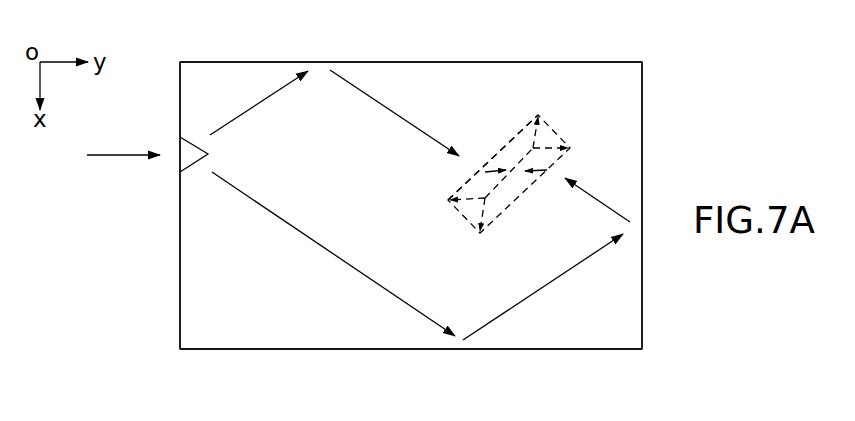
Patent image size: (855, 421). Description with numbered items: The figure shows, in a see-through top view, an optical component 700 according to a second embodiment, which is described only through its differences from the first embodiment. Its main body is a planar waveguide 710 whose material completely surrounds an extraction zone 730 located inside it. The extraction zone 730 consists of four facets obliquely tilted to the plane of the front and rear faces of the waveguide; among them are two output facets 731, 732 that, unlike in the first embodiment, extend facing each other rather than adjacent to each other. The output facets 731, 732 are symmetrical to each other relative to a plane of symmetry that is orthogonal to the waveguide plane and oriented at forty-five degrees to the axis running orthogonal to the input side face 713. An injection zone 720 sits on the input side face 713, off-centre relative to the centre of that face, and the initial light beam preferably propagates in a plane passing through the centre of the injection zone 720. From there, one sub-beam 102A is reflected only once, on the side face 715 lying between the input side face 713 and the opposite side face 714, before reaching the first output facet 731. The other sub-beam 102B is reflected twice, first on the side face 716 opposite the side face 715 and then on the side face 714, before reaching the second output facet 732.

The optical component 700 is at (664, 63).
The planar waveguide 710 is at (193, 302).
The input side face 713 is at (180, 222).
The side face 714 is at (642, 322).
The side face 715 is at (590, 62).
The side face 716 is at (390, 349).
The injection zone 720 is at (163, 138).
The sub-beam 102A is at (250, 110).
The sub-beam 102B is at (296, 230).
The extraction zone 730 is at (505, 125).
The first output facet 731 is at (470, 180).
The second output facet 732 is at (547, 160).